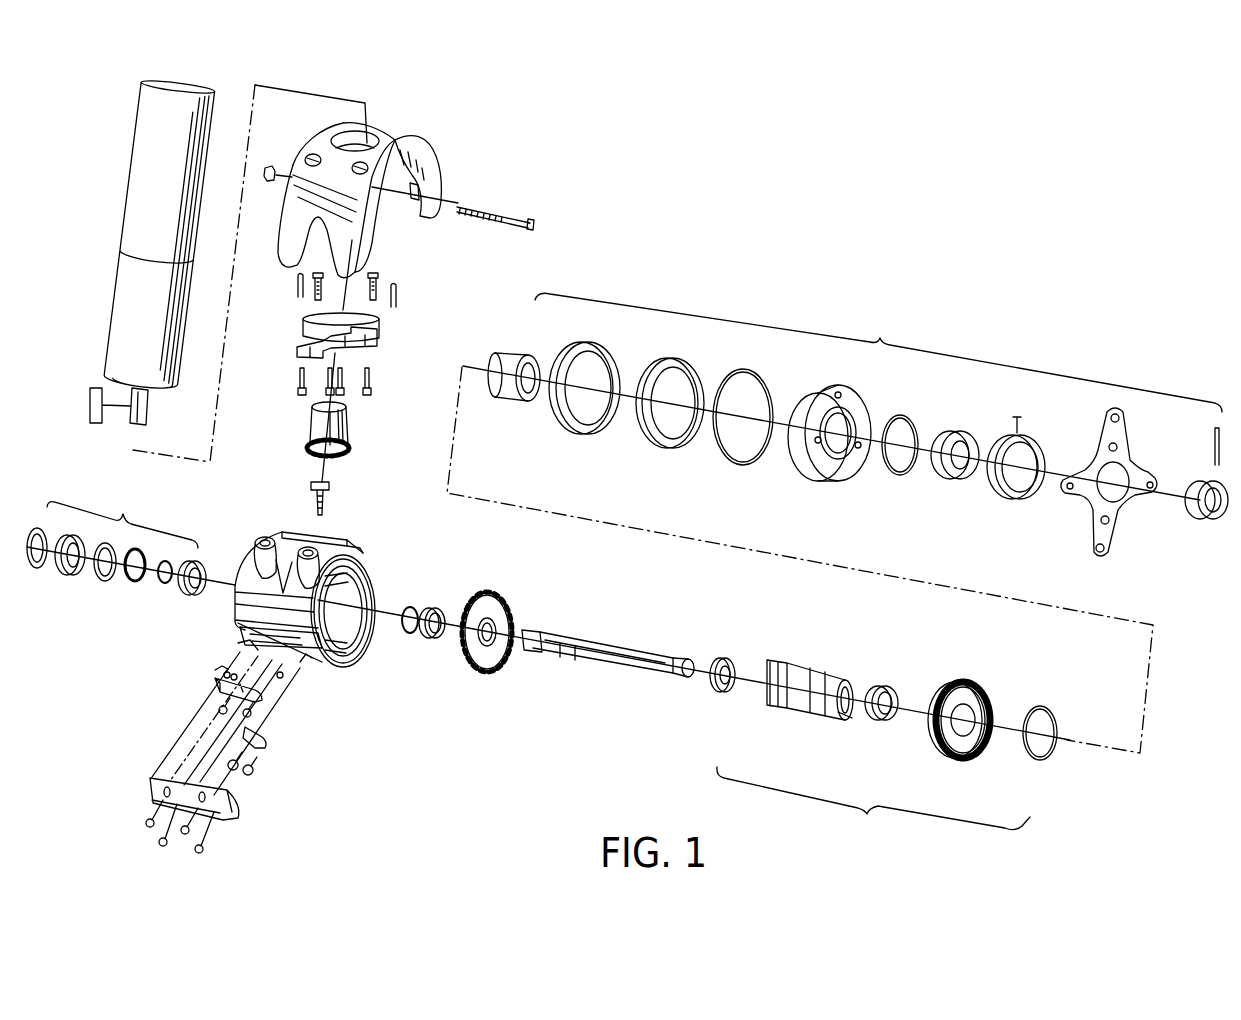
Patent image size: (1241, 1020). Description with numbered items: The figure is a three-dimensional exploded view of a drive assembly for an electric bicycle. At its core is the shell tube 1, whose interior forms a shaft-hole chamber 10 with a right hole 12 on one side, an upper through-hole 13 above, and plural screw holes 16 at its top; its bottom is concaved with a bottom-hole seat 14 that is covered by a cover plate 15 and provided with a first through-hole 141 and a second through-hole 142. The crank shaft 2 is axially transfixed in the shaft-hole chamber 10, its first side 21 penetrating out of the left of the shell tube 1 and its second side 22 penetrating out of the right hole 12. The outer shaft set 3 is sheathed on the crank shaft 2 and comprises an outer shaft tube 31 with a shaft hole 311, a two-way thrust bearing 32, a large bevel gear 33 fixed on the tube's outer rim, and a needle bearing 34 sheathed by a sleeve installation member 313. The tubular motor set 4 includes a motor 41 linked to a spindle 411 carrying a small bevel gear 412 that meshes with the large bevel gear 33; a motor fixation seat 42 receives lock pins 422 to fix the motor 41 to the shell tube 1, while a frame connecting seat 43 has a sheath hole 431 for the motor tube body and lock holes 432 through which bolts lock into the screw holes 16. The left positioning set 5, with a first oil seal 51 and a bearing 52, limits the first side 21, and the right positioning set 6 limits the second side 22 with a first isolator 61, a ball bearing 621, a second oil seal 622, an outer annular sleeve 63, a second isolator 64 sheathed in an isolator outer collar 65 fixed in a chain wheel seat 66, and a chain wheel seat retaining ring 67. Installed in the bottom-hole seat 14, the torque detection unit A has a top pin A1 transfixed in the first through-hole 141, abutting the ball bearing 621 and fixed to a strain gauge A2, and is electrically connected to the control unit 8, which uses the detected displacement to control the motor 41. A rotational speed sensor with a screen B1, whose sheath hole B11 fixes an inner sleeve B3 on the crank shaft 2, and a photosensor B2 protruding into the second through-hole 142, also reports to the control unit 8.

The shell tube 1 is at (358, 660).
The shaft-hole chamber 10 is at (337, 593).
The right hole 12 is at (370, 640).
The upper through-hole 13 is at (320, 535).
The bottom-hole seat 14 is at (295, 670).
The first through-hole 141 is at (303, 660).
The second through-hole 142 is at (248, 642).
The cover plate 15 is at (230, 820).
The screw holes 16 is at (265, 540).
The crank shaft 2 is at (615, 637).
The first side 21 is at (527, 647).
The second side 22 is at (678, 677).
The outer shaft set 3 is at (867, 822).
The outer shaft tube 31 is at (810, 663).
The shaft hole 311 is at (850, 680).
The sleeve installation member 313 is at (853, 713).
The two-way thrust bearing 32 is at (723, 660).
The large bevel gear 33 is at (953, 680).
The needle bearing 34 is at (883, 687).
The tubular motor set 4 is at (193, 62).
The motor 41 is at (130, 295).
The spindle 411 is at (350, 423).
The small bevel gear 412 is at (305, 445).
The motor fixation seat 42 is at (380, 340).
The lock pins 422 is at (397, 293).
The frame connecting seat 43 is at (425, 140).
The sheath hole 431 is at (378, 140).
The lock holes 432 is at (313, 155).
The left positioning set 5 is at (124, 515).
The first oil seal 51 is at (60, 575).
The bearing 52 is at (183, 593).
The right positioning set 6 is at (881, 338).
The first isolator 61 is at (512, 403).
The ball bearing 621 is at (585, 435).
The second oil seal 622 is at (670, 447).
The outer annular sleeve 63 is at (802, 473).
The second isolator 64 is at (945, 487).
The isolator outer collar 65 is at (1007, 502).
The chain wheel seat 66 is at (1115, 530).
The chain wheel seat retaining ring 67 is at (1205, 522).
The control unit 8 is at (220, 690).
The torque detection unit A is at (342, 773).
The top pin A1 is at (283, 680).
The strain gauge A2 is at (277, 785).
The screen B1 is at (468, 670).
The sheath hole B11 is at (498, 620).
The photosensor B2 is at (217, 672).
The inner sleeve B3 is at (438, 610).